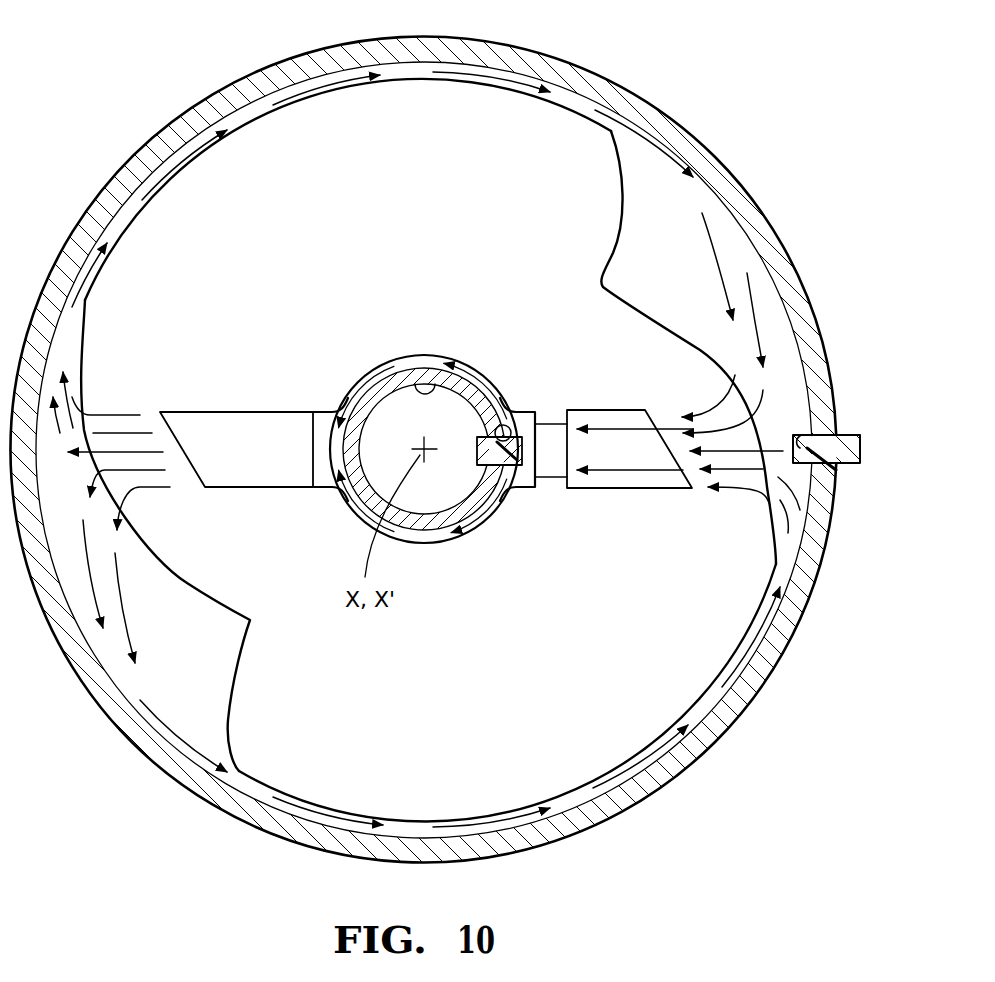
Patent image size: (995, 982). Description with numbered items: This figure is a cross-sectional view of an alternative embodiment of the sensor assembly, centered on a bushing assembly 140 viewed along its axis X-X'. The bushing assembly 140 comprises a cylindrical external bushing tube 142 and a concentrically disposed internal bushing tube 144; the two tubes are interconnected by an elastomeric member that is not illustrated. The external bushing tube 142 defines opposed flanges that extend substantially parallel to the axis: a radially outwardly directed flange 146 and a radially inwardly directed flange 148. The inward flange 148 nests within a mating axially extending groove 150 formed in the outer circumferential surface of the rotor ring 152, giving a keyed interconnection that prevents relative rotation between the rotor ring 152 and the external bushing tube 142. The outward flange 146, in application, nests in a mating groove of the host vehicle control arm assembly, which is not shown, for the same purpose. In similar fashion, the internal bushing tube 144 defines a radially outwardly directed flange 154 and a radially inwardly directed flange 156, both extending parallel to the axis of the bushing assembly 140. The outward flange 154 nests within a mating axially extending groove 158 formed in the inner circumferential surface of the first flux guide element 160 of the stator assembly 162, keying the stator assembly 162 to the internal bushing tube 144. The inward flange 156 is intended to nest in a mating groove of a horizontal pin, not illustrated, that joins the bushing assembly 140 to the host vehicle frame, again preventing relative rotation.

The bushing assembly 140 is at (130, 122).
The external bushing tube 142 is at (787, 260).
The internal bushing tube 144 is at (437, 383).
The radially outwardly directed flange 146 is at (862, 453).
The radially inwardly directed flange 148 is at (836, 470).
The axially extending groove 150 is at (793, 437).
The rotor ring 152 is at (697, 197).
The radially outwardly directed flange 154 is at (520, 452).
The radially inwardly directed flange 156 is at (448, 512).
The axially extending groove 158 is at (503, 425).
The first flux guide element 160 is at (318, 455).
The stator assembly 162 is at (340, 367).